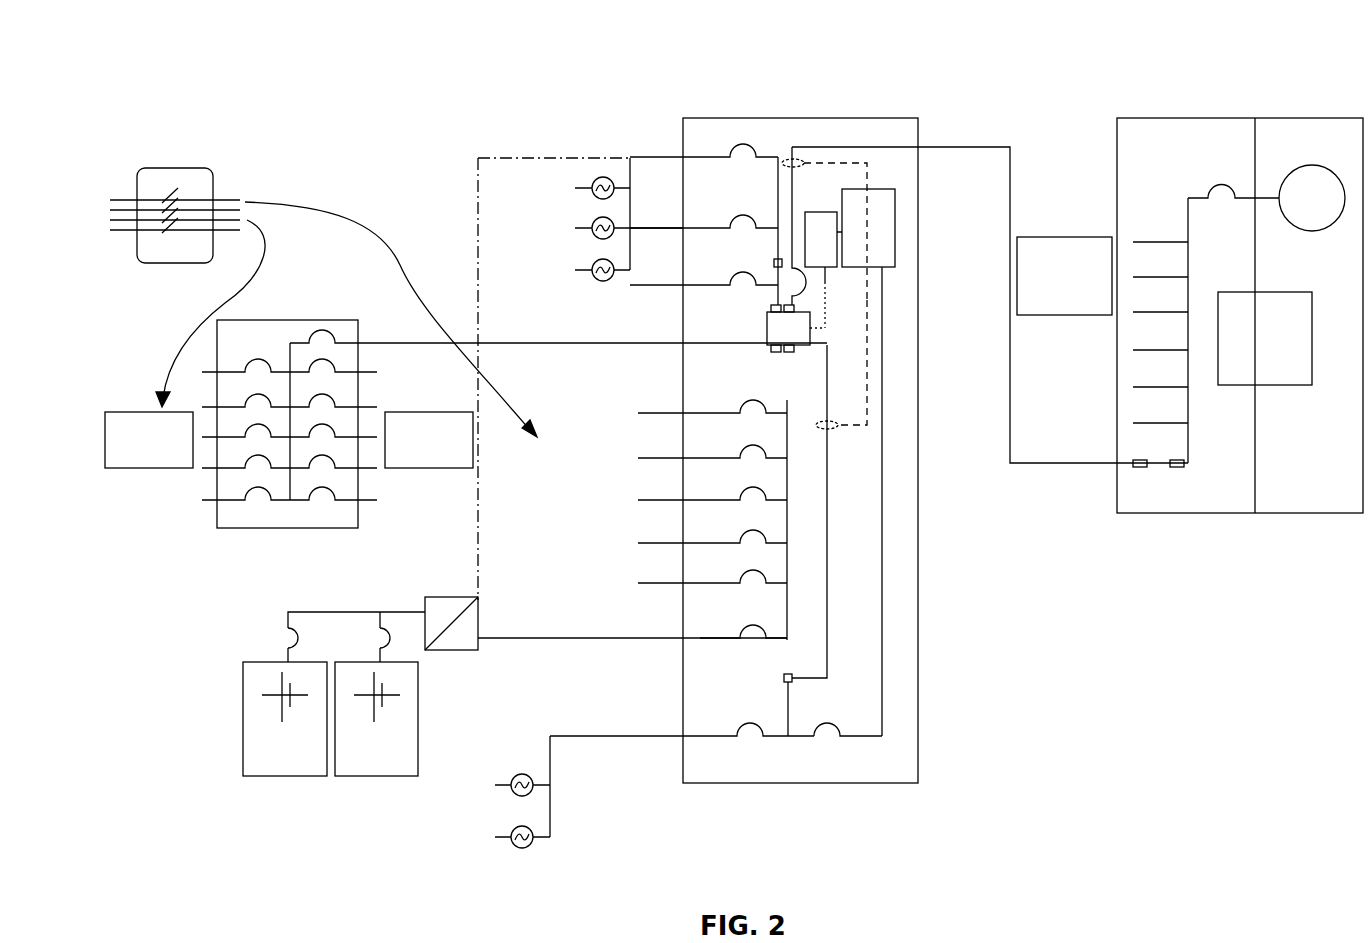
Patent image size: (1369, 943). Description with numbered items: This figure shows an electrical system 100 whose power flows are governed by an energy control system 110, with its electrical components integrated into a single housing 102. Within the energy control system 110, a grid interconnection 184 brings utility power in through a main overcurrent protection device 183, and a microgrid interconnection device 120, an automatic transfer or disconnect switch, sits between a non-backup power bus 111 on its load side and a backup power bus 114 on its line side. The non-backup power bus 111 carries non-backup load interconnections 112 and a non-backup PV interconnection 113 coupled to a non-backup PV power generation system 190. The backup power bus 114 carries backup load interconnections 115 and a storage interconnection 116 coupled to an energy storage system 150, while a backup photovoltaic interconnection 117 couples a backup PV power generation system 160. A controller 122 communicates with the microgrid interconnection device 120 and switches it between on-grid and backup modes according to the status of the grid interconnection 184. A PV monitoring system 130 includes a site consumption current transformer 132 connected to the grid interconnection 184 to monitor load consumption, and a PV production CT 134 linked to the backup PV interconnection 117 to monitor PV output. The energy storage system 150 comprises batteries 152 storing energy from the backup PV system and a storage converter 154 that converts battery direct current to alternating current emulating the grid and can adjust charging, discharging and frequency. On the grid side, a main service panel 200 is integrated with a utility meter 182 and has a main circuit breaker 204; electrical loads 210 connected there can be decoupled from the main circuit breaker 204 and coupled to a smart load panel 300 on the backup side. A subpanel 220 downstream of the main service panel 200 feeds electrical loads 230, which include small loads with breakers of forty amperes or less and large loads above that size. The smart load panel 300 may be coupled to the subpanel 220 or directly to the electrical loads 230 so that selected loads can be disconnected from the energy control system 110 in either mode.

The electrical system 100 is at (326, 120).
The housing 102 is at (918, 595).
The energy control system 110 is at (882, 80).
The non-backup power bus 111 is at (776, 200).
The non-backup load interconnection 112 is at (660, 288).
The non-backup PV interconnection 113 is at (703, 155).
The backup power bus 114 is at (787, 494).
The backup load interconnection 115 is at (652, 458).
The storage interconnection 116 is at (705, 640).
The backup photovoltaic interconnection 117 is at (790, 705).
The microgrid interconnection device 120 is at (767, 330).
The controller 122 is at (806, 283).
The PV monitoring system 130 is at (895, 232).
The site consumption current transformer 132 is at (867, 350).
The PV production CT 134 is at (869, 166).
The energy storage system 150 is at (238, 596).
The battery 152 is at (285, 776).
The storage converter 154 is at (441, 597).
The backup photovoltaic power generation system 160 is at (420, 858).
The utility meter 182 is at (1300, 166).
The main overcurrent protection device 183 is at (827, 272).
The grid interconnection 184 is at (1010, 147).
The non-backup PV power generation system 190 is at (499, 188).
The main service panel 200 is at (1150, 118).
The main circuit breaker 204 is at (1226, 188).
The electrical loads 210 is at (1073, 237).
The subpanel 220 is at (340, 318).
The electrical loads 230 is at (125, 412).
The smart load panel 300 is at (175, 168).